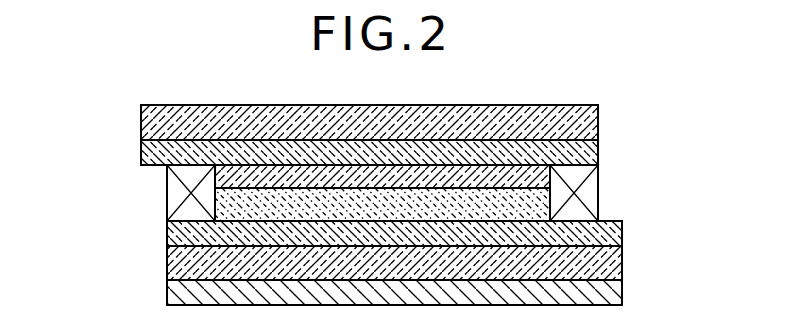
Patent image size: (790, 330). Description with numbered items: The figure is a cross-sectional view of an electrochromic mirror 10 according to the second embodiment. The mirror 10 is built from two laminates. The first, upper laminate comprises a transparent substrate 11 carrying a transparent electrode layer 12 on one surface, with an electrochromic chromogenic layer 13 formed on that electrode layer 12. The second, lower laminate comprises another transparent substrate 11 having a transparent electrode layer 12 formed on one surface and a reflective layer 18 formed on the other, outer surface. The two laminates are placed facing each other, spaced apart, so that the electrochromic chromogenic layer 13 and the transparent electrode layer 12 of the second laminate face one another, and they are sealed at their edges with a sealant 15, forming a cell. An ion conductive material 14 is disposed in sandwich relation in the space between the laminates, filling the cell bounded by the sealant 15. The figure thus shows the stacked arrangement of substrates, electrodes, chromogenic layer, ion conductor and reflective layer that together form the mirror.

The electrochromic mirror 10 is at (574, 92).
The transparent substrate 11 is at (588, 121).
The transparent electrode layer 12 is at (588, 148).
The electrochromic chromogenic layer 13 is at (537, 178).
The ion conductive material 14 is at (532, 203).
The sealant 15 is at (168, 202).
The reflective layer 18 is at (608, 292).